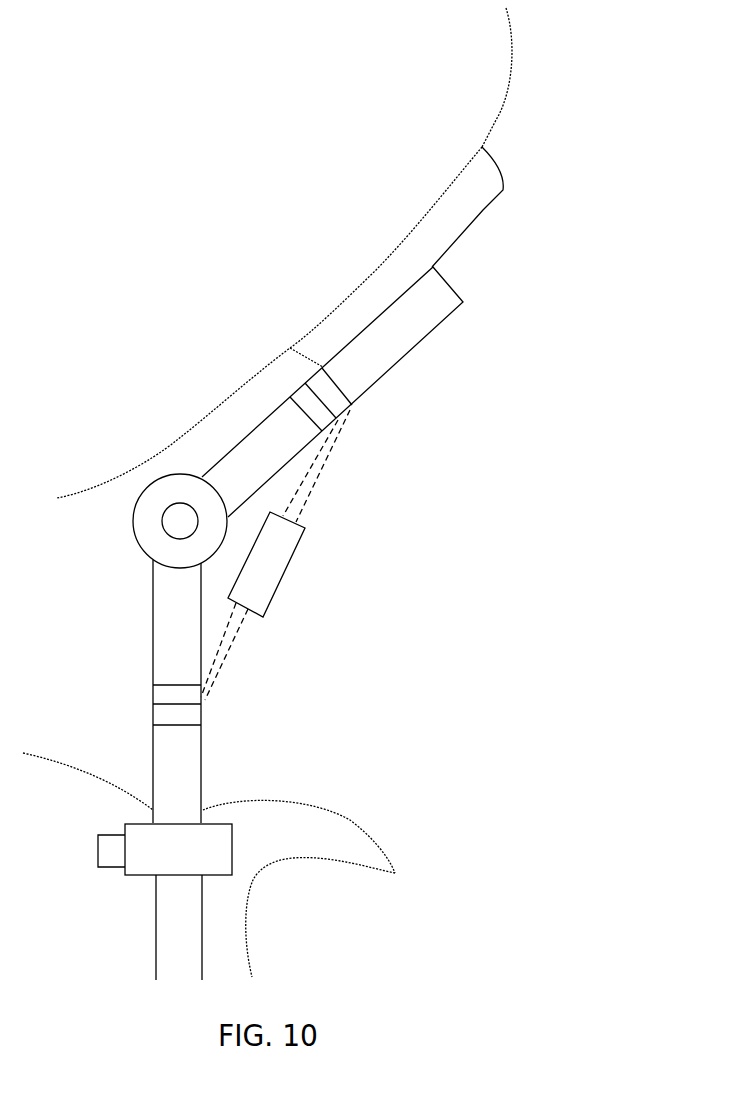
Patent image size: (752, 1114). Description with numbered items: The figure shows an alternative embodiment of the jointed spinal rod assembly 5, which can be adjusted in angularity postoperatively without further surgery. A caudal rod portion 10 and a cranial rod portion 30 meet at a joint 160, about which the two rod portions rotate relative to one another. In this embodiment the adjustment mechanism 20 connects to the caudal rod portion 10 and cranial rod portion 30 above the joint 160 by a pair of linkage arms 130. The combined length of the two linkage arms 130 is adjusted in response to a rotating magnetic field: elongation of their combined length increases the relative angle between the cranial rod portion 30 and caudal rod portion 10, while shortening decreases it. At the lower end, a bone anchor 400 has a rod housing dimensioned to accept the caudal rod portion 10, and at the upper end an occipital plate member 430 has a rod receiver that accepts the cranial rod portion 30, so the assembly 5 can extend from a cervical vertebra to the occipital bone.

The jointed spinal rod assembly 5 is at (324, 563).
The caudal rod portion 10 is at (202, 767).
The adjustment mechanism 20 is at (305, 557).
The cranial rod portion 30 is at (410, 350).
The linkage arms 130 is at (327, 453).
The joint 160 is at (133, 528).
The bone anchor 400 is at (232, 843).
The occipital plate member 430 is at (485, 208).